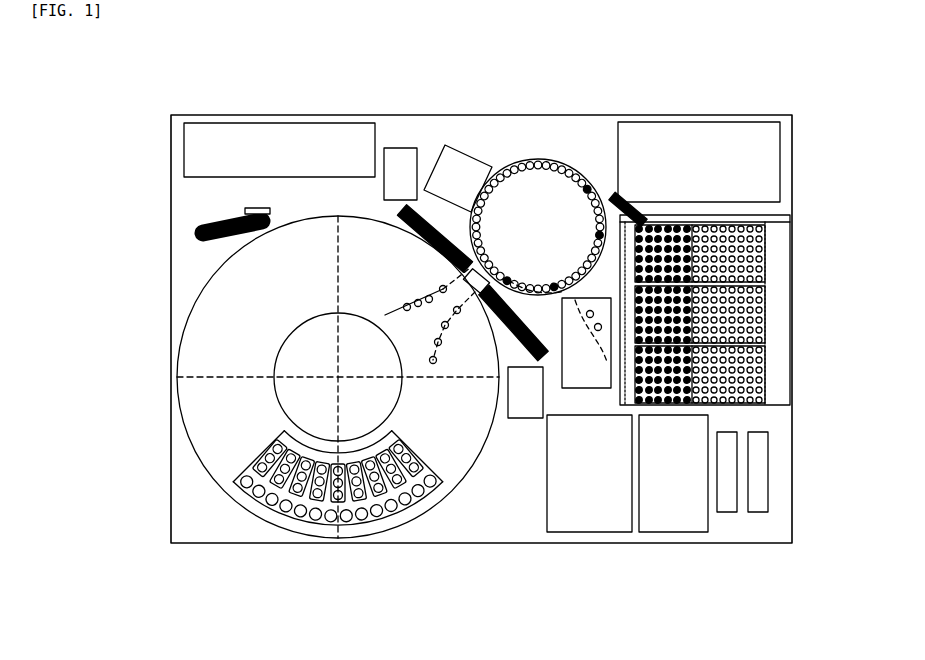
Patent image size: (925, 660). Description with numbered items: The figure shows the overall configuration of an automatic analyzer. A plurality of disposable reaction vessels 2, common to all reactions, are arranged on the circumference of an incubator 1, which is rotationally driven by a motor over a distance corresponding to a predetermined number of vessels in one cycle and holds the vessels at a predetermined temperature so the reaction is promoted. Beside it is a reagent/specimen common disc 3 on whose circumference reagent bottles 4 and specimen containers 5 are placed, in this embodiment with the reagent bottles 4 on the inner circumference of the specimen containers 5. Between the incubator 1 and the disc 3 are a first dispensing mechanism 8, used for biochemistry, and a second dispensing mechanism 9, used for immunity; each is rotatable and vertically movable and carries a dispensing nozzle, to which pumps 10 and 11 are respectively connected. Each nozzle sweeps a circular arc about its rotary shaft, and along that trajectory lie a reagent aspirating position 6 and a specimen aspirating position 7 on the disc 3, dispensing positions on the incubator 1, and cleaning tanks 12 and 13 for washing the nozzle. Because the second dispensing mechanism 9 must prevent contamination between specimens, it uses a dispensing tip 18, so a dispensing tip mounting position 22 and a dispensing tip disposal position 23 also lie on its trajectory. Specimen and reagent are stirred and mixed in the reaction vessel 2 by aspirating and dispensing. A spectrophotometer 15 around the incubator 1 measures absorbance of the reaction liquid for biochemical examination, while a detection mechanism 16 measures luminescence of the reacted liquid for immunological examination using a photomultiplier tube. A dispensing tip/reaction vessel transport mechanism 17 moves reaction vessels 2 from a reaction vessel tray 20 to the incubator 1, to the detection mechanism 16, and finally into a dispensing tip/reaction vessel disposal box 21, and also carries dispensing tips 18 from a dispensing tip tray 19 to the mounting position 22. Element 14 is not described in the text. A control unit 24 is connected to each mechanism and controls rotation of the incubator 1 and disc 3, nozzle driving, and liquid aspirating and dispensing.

The incubator 1 is at (543, 197).
The reaction vessel 2 is at (580, 172).
The reagent/specimen common disc 3 is at (247, 410).
The reagent bottle 4 is at (287, 467).
The specimen container 5 is at (313, 513).
The reagent aspirating position 6 is at (403, 307).
The specimen aspirating position 7 is at (385, 315).
The first dispensing mechanism 8 is at (412, 200).
The second dispensing mechanism 9 is at (543, 345).
The pump 10 is at (398, 185).
The pump 11 is at (535, 407).
The cleaning tank 12 is at (440, 200).
The cleaning tank 13 is at (440, 200).
The sample loading unit 14 is at (210, 243).
The spectrophotometer 15 is at (482, 172).
The detection mechanism 16 is at (685, 147).
The dispensing tip/reaction vessel transport mechanism 17 is at (630, 203).
The dispensing tip 18 is at (686, 250).
The dispensing tip tray 19 is at (673, 265).
The reaction vessel tray 20 is at (735, 307).
The dispensing tip/reaction vessel disposal box 21 is at (597, 357).
The dispensing tip mounting position 22 is at (598, 327).
The dispensing tip disposal position 23 is at (592, 313).
The control unit 24 is at (228, 162).